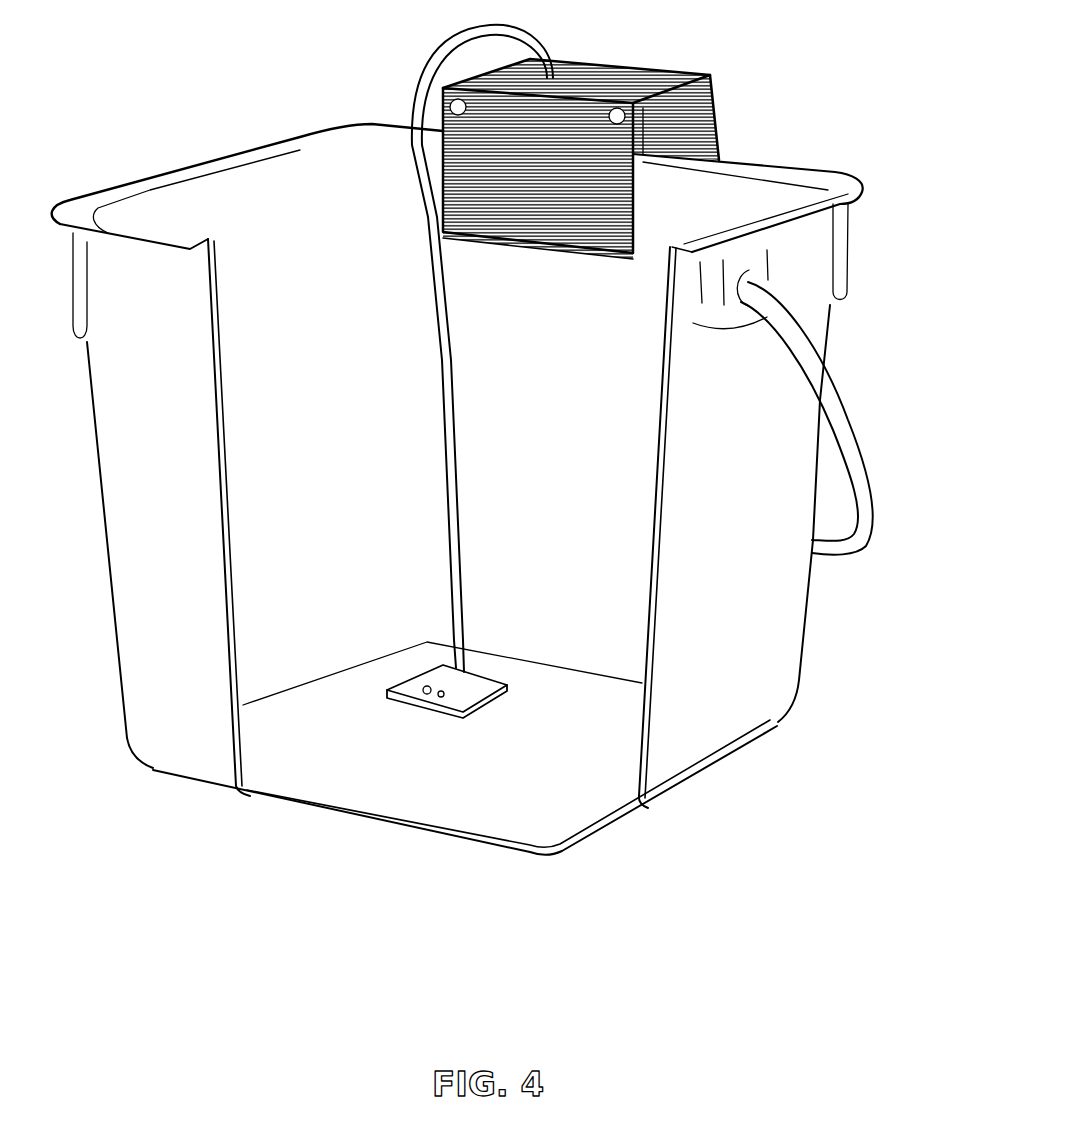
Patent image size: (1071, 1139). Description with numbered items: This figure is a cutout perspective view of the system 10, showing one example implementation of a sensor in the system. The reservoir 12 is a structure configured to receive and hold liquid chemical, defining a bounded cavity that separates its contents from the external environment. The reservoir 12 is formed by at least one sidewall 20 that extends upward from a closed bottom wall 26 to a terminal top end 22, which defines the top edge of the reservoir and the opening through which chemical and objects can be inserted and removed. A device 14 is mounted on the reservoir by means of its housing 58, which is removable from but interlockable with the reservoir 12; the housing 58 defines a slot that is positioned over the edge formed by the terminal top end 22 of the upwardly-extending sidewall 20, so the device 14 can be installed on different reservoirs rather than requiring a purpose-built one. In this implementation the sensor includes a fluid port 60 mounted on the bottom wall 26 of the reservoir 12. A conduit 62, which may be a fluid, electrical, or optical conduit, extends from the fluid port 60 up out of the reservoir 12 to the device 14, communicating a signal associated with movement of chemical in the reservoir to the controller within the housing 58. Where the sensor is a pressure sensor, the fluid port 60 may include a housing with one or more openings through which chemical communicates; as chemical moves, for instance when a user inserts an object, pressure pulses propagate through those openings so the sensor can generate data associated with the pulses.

The system 10 is at (490, 447).
The reservoir 12 is at (471, 503).
The device 14 is at (625, 137).
The sidewall 20 is at (117, 587).
The terminal top end 22 is at (150, 178).
The bottom wall 26 is at (372, 817).
The housing 58 is at (548, 181).
The fluid port 60 is at (470, 694).
The conduit 62 is at (453, 457).